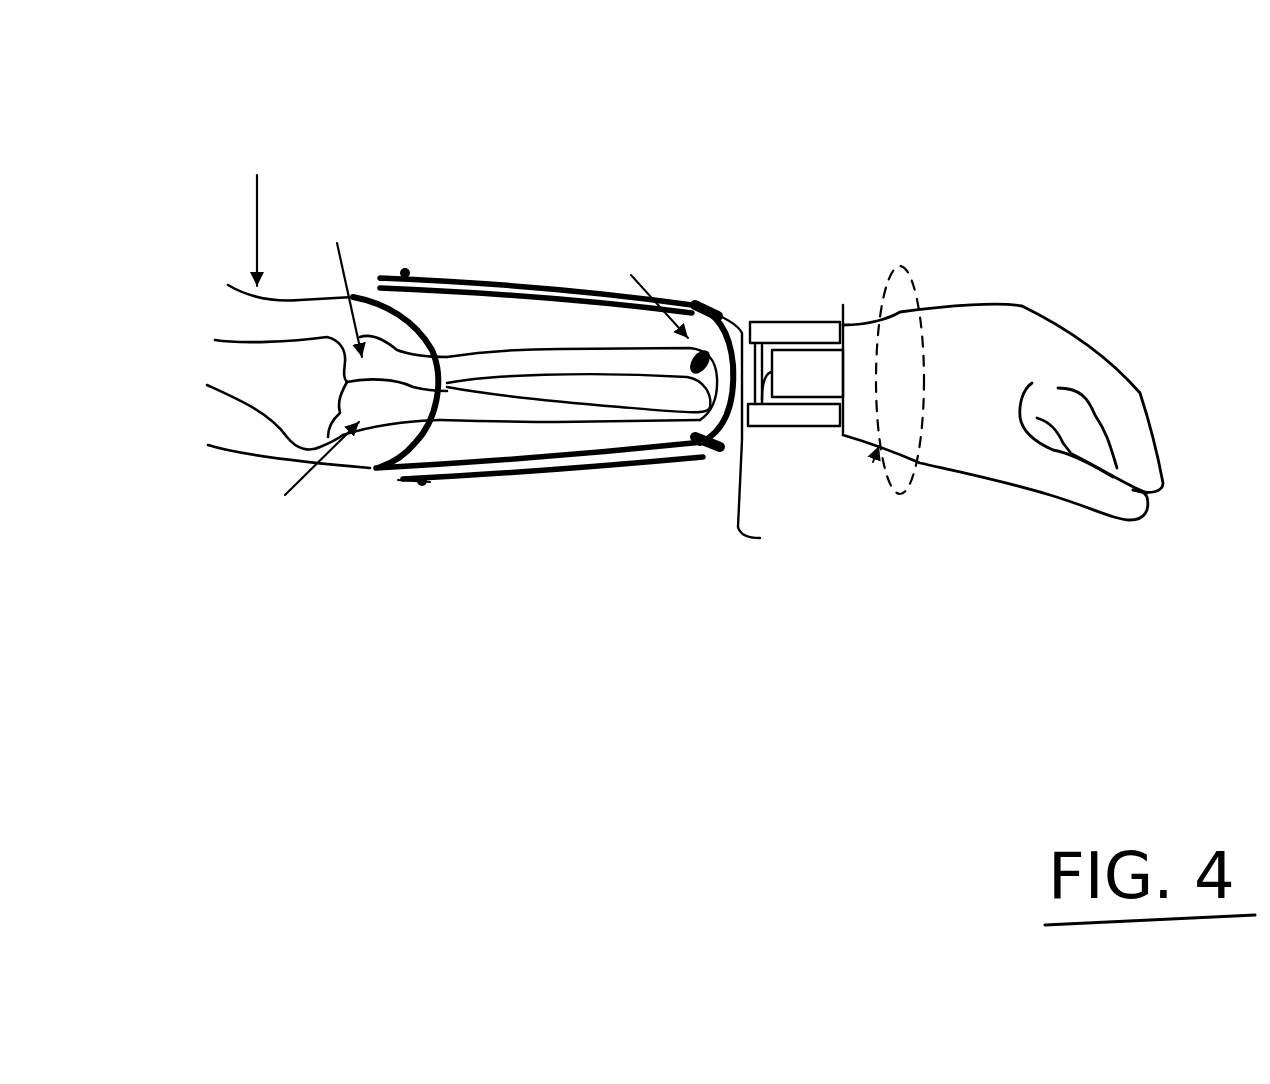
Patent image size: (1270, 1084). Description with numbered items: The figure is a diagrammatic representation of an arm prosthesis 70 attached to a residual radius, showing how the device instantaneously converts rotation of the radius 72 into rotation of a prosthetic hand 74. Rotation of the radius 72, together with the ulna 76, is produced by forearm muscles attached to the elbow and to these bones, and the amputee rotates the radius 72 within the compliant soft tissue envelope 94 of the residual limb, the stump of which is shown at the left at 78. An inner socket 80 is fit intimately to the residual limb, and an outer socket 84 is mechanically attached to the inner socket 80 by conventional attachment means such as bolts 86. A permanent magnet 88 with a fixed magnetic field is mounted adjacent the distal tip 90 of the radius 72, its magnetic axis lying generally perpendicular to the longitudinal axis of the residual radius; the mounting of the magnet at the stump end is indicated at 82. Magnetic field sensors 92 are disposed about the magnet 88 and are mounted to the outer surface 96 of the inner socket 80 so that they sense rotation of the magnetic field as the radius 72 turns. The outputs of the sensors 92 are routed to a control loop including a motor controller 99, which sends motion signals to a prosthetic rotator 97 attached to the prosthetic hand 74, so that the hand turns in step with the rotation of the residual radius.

The arm prosthesis 70 is at (1150, 603).
The radius 72 is at (557, 363).
The prosthetic hand 74 is at (1025, 347).
The ulna 76 is at (555, 412).
The residual limb 78 is at (287, 387).
The inner socket 80 is at (493, 284).
The pad 82 is at (630, 340).
The outer socket 84 is at (490, 485).
The bolts 86 is at (418, 485).
The permanent magnet 88 is at (630, 272).
The distal tip 90 is at (797, 422).
The magnetic field sensors 92 is at (707, 462).
The compliant soft tissue envelope 94 is at (740, 140).
The outer surface 96 is at (654, 445).
The prosthetic rotator 97 is at (834, 362).
The motor controller 99 is at (793, 324).